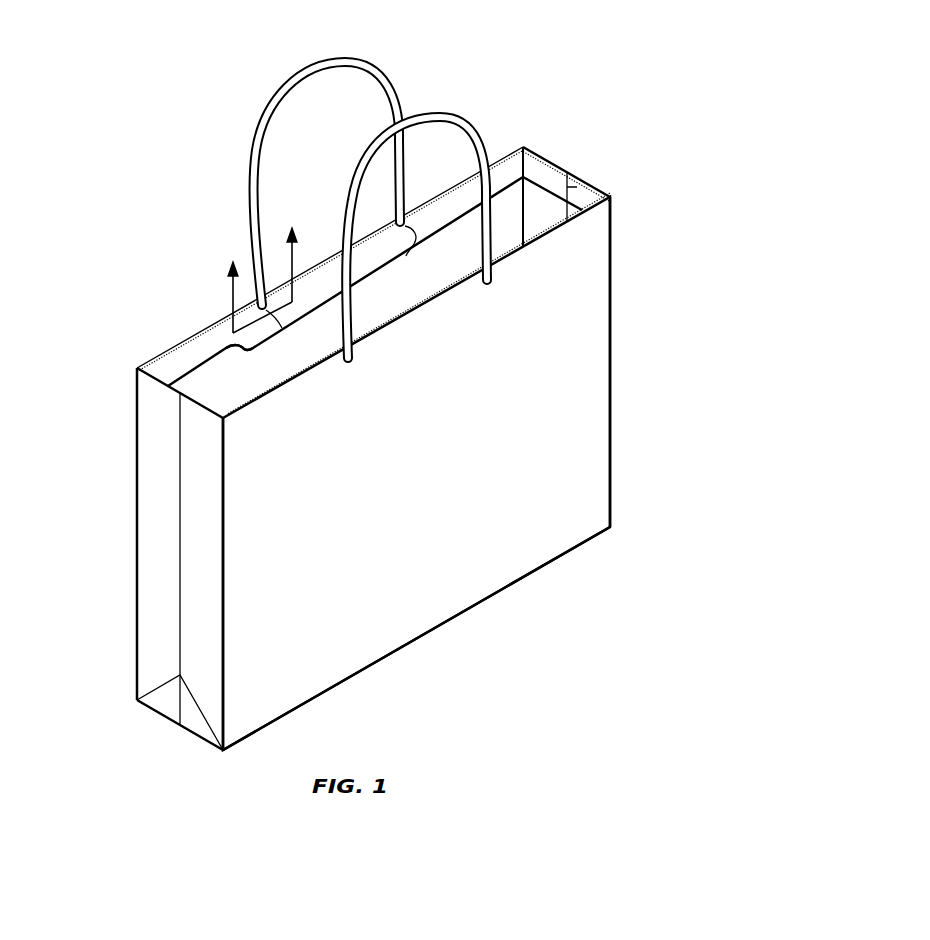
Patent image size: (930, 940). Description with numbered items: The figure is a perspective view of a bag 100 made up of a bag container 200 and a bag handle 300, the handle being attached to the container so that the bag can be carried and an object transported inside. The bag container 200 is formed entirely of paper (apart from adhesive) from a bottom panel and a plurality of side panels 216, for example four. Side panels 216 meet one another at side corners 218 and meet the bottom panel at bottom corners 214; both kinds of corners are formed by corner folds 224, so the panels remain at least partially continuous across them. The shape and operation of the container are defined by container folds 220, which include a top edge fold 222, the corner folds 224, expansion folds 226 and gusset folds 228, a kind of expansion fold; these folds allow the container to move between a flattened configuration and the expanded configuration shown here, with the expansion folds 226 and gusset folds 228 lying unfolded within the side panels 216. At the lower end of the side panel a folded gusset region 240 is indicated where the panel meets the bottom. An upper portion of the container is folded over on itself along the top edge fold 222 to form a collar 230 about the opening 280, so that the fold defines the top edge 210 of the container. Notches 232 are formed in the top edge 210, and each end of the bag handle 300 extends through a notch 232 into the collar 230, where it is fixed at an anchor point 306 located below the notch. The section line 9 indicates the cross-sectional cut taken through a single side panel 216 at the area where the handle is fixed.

The bag 100 is at (700, 58).
The bag container 200 is at (665, 358).
The top edge 210 is at (535, 152).
The bottom corners 214 is at (432, 633).
The side panels 216 is at (587, 491).
The side corners 218 is at (611, 422).
The container folds 220 is at (382, 389).
The top edge fold 222 is at (348, 253).
The corner folds 224 is at (137, 402).
The expansion folds 226 is at (179, 515).
The gusset folds 228 is at (162, 682).
The collar 230 is at (508, 170).
The notches 232 is at (400, 230).
The bottom gusset fold 240 is at (143, 739).
The opening 280 is at (207, 366).
The bag handle 300 is at (273, 118).
The anchor points 306 is at (418, 253).
The section line 9- 9 is at (263, 268).